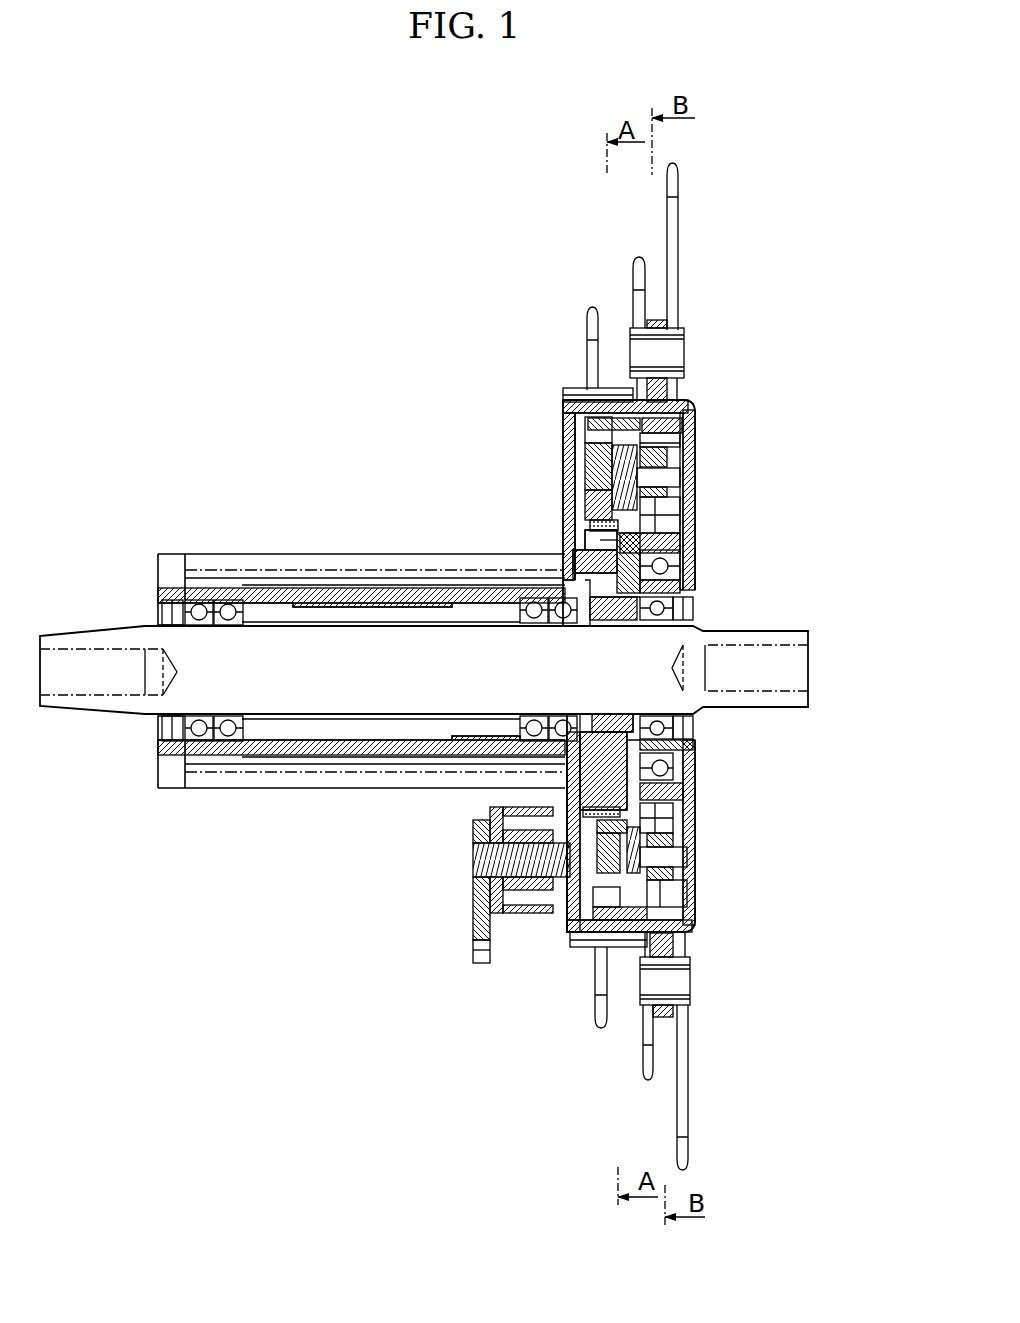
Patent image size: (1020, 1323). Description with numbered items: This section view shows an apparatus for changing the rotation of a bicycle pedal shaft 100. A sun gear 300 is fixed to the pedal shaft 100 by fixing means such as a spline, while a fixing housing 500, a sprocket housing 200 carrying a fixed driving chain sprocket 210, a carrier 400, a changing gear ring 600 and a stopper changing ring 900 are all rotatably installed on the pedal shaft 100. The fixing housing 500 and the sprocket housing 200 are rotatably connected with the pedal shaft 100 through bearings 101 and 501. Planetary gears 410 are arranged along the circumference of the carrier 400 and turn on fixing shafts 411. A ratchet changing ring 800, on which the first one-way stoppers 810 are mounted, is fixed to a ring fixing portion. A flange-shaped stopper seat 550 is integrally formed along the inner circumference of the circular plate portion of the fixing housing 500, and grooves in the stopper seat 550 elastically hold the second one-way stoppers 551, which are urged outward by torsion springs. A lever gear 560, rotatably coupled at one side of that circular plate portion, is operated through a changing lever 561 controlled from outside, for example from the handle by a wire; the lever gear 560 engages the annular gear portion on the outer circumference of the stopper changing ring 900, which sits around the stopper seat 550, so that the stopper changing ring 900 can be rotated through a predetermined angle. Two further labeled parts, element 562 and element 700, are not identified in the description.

The pedal shaft 100 is at (218, 698).
The bearings 101 is at (660, 555).
The sprocket housing 200 is at (693, 468).
The driving chain sprocket 210 is at (673, 267).
The sun gear 300 is at (670, 540).
The carrier 400 is at (612, 468).
The planetary gears 410 is at (667, 437).
The fixing shafts 411 is at (665, 470).
The fixing housing 500 is at (367, 593).
The bearings 501 is at (203, 602).
The stopper seat 550 is at (640, 743).
The second one-way stoppers 551 is at (597, 540).
The lever gear 560 is at (570, 942).
The changing lever 561 is at (477, 915).
The flange web 562 is at (517, 910).
The changing gear ring 600 is at (590, 482).
The ring 700 is at (663, 413).
The ratchet changing ring 800 is at (590, 373).
The first one-way stoppers 810 is at (582, 428).
The stopper changing ring 900 is at (582, 522).